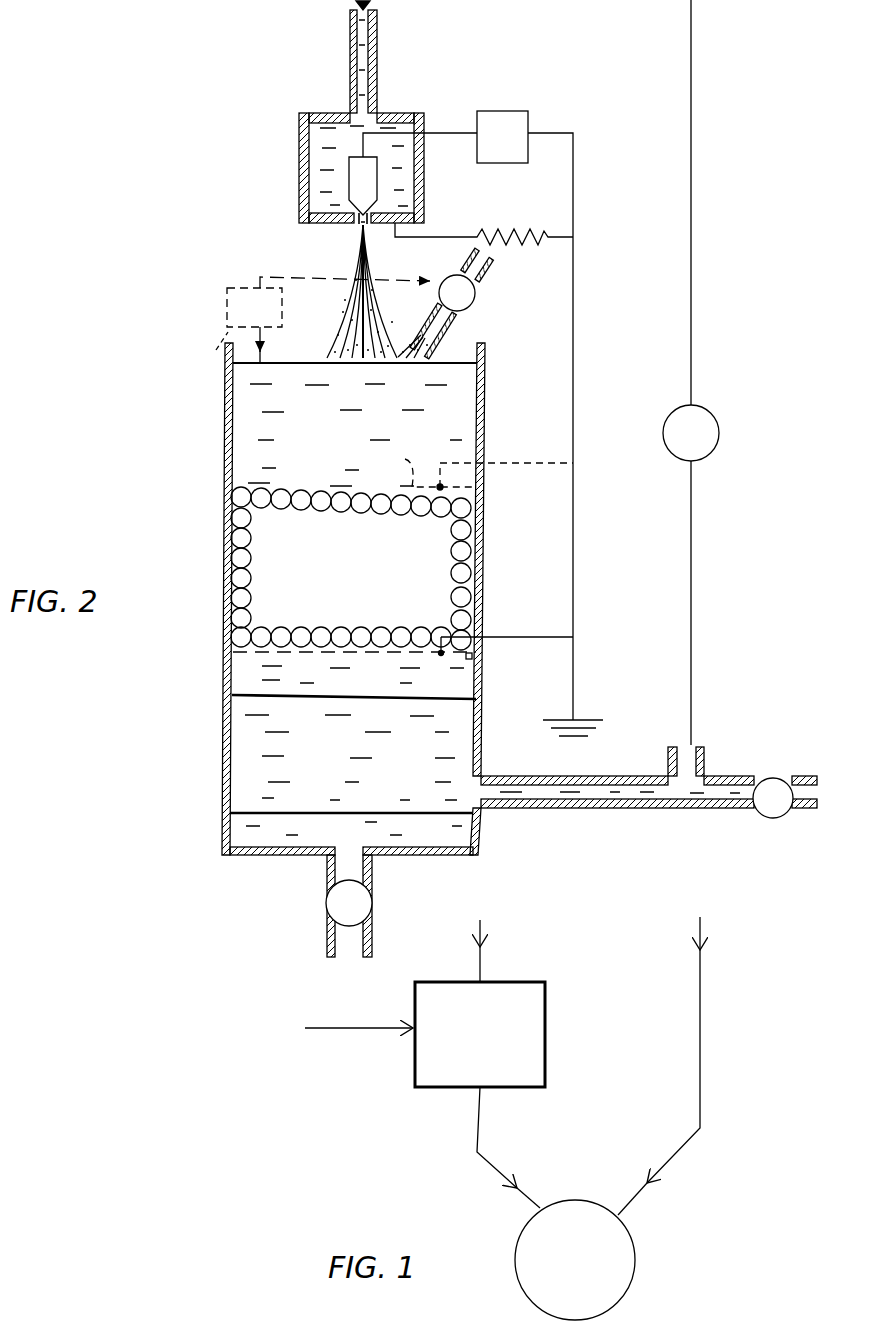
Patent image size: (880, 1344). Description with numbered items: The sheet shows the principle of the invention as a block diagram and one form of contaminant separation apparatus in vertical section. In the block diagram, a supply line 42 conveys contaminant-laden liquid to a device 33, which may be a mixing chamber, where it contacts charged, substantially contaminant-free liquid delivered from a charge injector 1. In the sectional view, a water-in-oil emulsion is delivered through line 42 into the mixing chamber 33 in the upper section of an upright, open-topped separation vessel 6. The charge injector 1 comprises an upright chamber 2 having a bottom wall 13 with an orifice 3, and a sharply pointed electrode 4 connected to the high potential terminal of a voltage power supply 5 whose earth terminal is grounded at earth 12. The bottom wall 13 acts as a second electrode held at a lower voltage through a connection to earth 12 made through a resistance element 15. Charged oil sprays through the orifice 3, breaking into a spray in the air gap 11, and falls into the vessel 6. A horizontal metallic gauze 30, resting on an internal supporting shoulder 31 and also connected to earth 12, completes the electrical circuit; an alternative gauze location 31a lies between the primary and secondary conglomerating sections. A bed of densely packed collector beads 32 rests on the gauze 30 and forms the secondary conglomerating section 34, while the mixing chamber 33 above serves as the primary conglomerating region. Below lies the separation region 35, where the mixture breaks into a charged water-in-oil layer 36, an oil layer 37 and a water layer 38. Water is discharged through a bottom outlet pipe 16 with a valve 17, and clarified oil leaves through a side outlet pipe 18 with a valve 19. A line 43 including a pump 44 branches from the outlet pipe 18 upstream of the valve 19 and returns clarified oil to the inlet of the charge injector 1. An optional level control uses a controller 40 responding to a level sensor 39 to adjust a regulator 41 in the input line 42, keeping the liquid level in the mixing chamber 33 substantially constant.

In FIG. 2, the charge injector 1 is at (295, 172).
In FIG. 1, the charge injector 1 is at (546, 1038).
In FIG. 2, the chamber 2 is at (308, 225).
In FIG. 2, the orifice 3 is at (368, 233).
In FIG. 2, the pointed electrode 4 is at (380, 174).
In FIG. 2, the voltage power supply 5 is at (522, 111).
In FIG. 2, the separation vessel 6 is at (223, 675).
In FIG. 2, the air gap 11 is at (333, 329).
In FIG. 2, the earth 12 is at (581, 712).
In FIG. 2, the bottom wall 13 is at (353, 225).
In FIG. 2, the resistance element 15 is at (532, 228).
In FIG. 2, the outlet pipe 16 is at (330, 870).
In FIG. 2, the valve 17 is at (372, 908).
In FIG. 2, the outlet pipe 18 is at (790, 777).
In FIG. 2, the valve 19 is at (762, 818).
In FIG. 2, the metallic gauze 30 is at (352, 652).
In FIG. 2, the internal supporting shoulder 31 is at (472, 657).
In FIG. 2, the alternative gauze electrode location 31a is at (474, 469).
In FIG. 2, the collector beads 32 is at (231, 563).
In FIG. 2, the mixing chamber 33 is at (304, 466).
In FIG. 1, the mixing chamber 33 is at (637, 1253).
In FIG. 2, the secondary conglomerating section 34 is at (486, 559).
In FIG. 2, the separation region 35 is at (247, 779).
In FIG. 2, the charged water-in-oil layer 36 is at (445, 670).
In FIG. 2, the oil layer 37 is at (410, 763).
In FIG. 2, the water layer 38 is at (445, 846).
In FIG. 2, the level sensor 39 is at (208, 357).
In FIG. 2, the controller 40 is at (226, 301).
In FIG. 2, the regulator 41 is at (469, 297).
In FIG. 2, the supply line 42 is at (445, 305).
In FIG. 2, the line 43 is at (701, 771).
In FIG. 2, the pump 44 is at (706, 459).